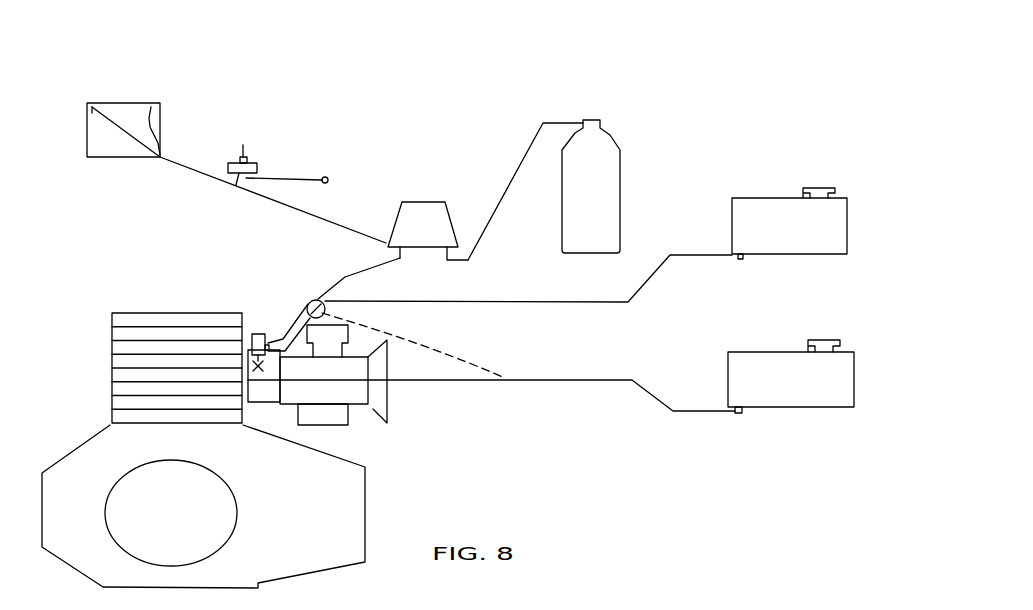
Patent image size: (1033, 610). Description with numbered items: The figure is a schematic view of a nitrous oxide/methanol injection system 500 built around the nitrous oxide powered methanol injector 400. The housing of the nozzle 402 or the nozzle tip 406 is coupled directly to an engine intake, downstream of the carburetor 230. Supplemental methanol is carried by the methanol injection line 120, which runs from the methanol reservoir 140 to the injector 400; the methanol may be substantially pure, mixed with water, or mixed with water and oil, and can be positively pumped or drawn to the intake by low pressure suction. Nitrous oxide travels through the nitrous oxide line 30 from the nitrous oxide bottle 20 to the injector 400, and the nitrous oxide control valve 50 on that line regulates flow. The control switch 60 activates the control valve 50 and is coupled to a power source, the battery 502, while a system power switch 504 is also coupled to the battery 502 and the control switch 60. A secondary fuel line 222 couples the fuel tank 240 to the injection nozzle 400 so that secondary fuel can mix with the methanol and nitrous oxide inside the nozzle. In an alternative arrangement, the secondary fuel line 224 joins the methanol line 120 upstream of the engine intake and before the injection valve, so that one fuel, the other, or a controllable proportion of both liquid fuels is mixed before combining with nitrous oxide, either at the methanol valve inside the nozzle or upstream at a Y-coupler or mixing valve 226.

The nitrous oxide/methanol injection system 500 is at (703, 55).
The battery 502 is at (118, 160).
The system power switch 504 is at (228, 162).
The control switch 60 is at (325, 177).
The nitrous oxide control valve 50 is at (420, 200).
The nitrous oxide line 30 is at (518, 167).
The nitrous oxide bottle 20 is at (622, 195).
The methanol reservoir 140 is at (770, 197).
The methanol injection line 120 is at (590, 305).
The Y-coupler or mixing valve 226 is at (310, 303).
The secondary fuel line 224 is at (452, 363).
The secondary fuel line 222 is at (425, 380).
The fuel tank 240 is at (790, 407).
The nitrous oxide powered methanol injector 400 is at (252, 344).
The nozzle 402 is at (192, 323).
The nozzle tip 406 is at (192, 323).
The carburetor 230 is at (368, 387).